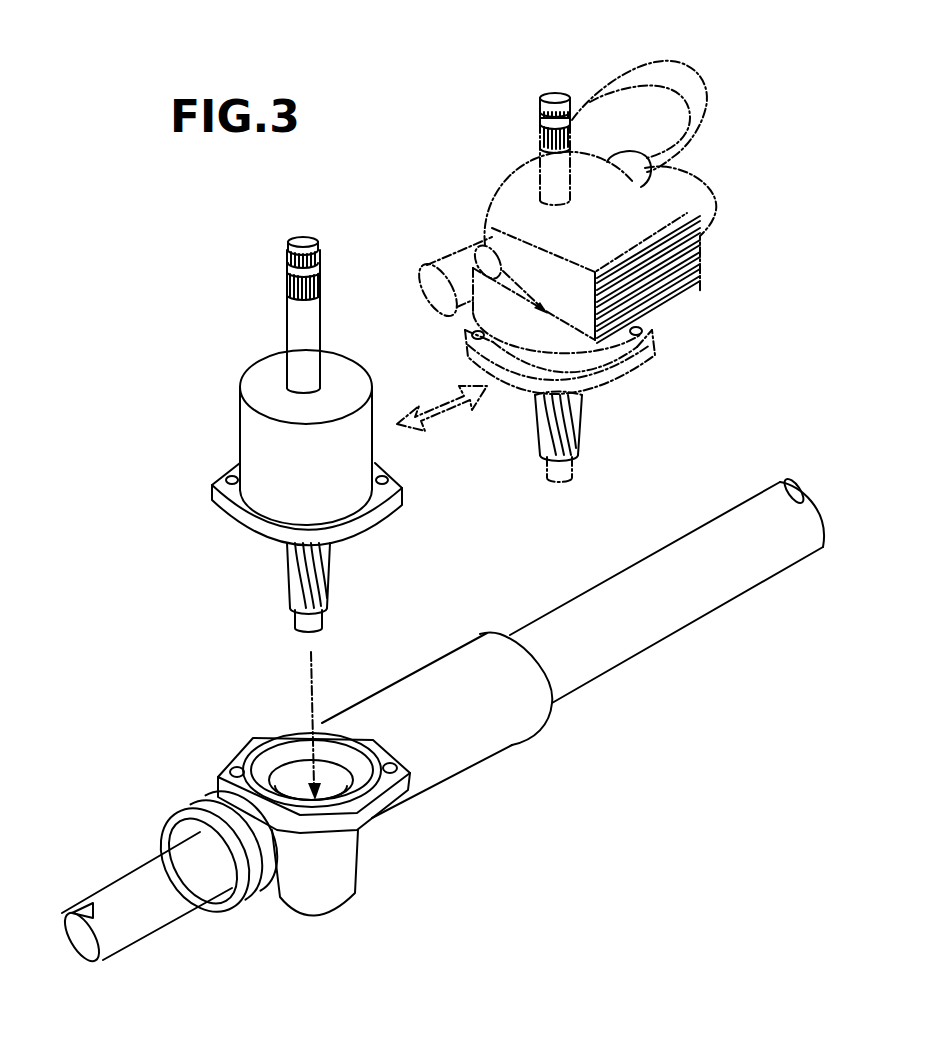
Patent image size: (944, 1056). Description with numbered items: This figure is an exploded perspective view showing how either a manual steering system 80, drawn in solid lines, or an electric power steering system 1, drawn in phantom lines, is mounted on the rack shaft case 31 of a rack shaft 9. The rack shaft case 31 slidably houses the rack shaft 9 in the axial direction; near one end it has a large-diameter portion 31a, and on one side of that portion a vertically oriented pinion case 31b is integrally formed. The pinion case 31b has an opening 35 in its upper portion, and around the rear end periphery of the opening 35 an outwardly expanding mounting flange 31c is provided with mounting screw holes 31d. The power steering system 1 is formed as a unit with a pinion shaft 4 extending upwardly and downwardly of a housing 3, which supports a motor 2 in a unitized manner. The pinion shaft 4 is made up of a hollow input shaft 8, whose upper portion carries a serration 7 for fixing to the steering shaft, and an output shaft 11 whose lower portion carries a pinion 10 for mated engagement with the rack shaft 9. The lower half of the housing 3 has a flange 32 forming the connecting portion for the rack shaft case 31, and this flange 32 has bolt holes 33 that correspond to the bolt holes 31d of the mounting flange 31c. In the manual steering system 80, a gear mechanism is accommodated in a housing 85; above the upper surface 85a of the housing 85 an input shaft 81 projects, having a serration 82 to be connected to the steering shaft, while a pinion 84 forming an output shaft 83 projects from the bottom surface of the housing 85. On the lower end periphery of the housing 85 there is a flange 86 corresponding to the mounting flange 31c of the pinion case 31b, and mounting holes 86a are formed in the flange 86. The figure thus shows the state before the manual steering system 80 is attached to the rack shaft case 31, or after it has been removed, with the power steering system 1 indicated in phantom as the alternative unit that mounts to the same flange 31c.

The power steering system 1 is at (727, 128).
The motor 2 is at (714, 190).
The housing 3 is at (464, 321).
The pinion shaft 4 is at (527, 186).
The serration 7 is at (542, 113).
The input shaft 8 is at (554, 92).
The rack shaft 9 is at (140, 883).
The pinion 10 is at (582, 424).
The output shaft 11 is at (573, 468).
The rack shaft case 31 is at (703, 601).
The large-diameter portion 31a is at (468, 747).
The pinion case 31b is at (333, 907).
The mounting flange 31c is at (348, 736).
The bolt holes 31d is at (232, 766).
The flange 32 is at (657, 347).
The bolt holes 33 is at (483, 336).
The opening 35 is at (291, 783).
The manual steering system 80 is at (219, 369).
The input shaft 81 is at (300, 328).
The serration 82 is at (289, 252).
The output shaft 83 is at (300, 620).
The pinion 84 is at (300, 588).
The housing 85 is at (257, 443).
The upper surface 85a is at (263, 397).
The flange 86 is at (237, 516).
The mounting holes 86a is at (228, 467).